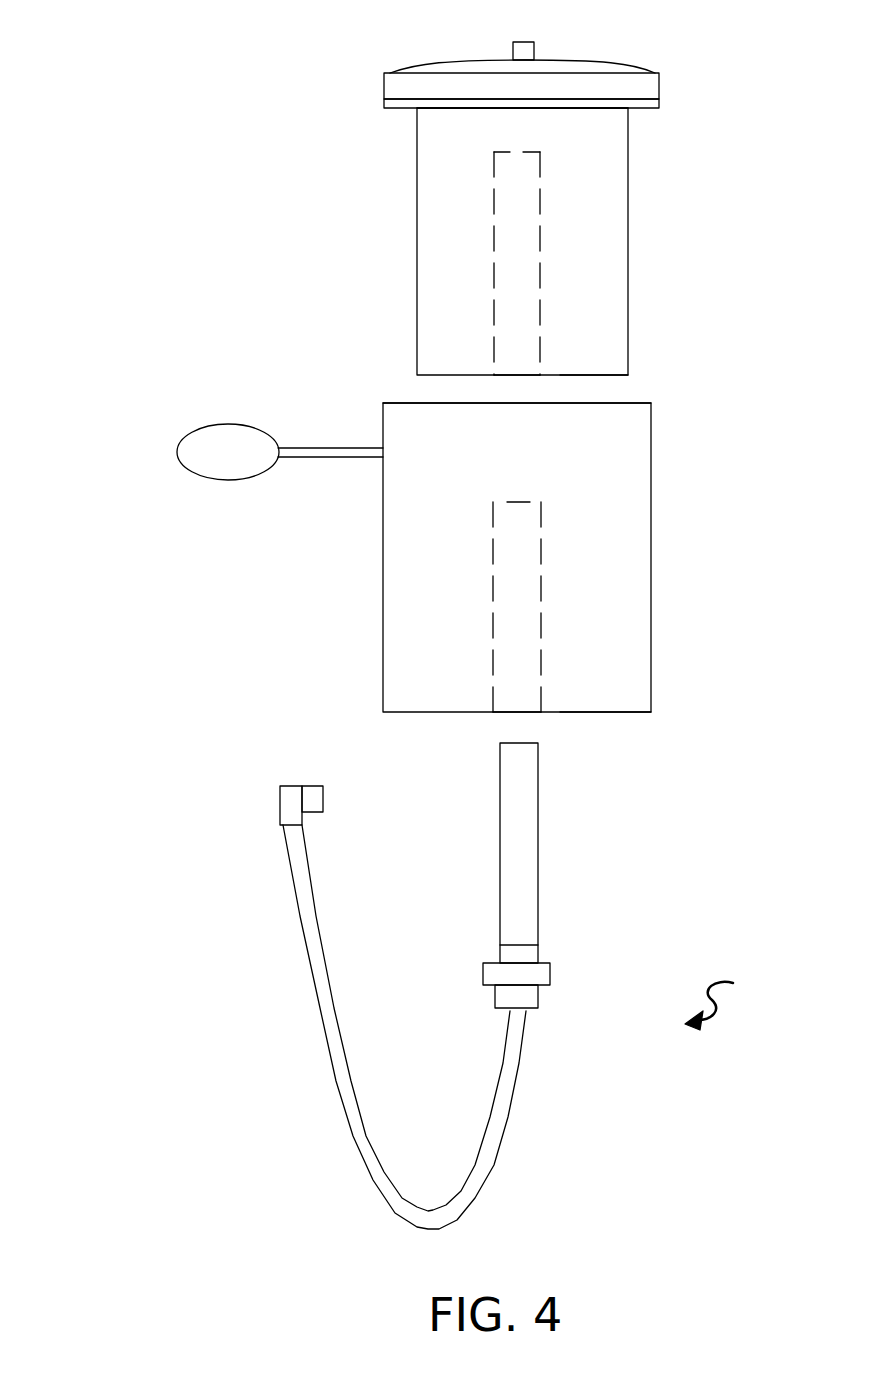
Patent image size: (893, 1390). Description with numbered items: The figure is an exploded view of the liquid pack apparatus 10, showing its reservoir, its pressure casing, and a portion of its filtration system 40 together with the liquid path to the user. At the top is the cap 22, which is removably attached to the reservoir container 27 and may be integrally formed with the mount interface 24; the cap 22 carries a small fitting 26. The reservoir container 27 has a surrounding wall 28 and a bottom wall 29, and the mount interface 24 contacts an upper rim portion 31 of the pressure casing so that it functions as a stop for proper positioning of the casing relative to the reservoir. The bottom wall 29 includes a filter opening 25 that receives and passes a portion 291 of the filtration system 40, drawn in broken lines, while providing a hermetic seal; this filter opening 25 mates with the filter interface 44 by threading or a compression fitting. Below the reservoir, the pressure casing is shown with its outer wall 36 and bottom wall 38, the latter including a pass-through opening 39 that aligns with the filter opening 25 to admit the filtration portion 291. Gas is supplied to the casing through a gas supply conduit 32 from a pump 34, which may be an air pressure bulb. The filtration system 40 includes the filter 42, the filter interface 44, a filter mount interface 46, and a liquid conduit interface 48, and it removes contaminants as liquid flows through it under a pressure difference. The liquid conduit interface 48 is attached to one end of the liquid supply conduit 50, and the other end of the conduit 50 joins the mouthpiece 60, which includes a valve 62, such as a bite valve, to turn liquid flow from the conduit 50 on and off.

The liquid pack apparatus 10 is at (58, 66).
The cap 22 is at (660, 75).
The mount interface 24 is at (660, 108).
The knob 26 is at (525, 38).
The reservoir container 27 is at (603, 150).
The surrounding wall 28 is at (628, 207).
The portion of the filtration system 291 is at (532, 262).
The bottom wall 29 is at (590, 375).
The filter opening 25 is at (513, 375).
The upper rim portion 31 is at (400, 403).
The gas supply conduit 32 is at (322, 457).
The pump 34 is at (228, 452).
The outer wall 36 is at (651, 490).
The bottom wall 38 is at (618, 712).
The pass-through opening 39 is at (508, 712).
The filtration system 40 is at (728, 1004).
The filter 42 is at (538, 810).
The filter interface 44 is at (538, 952).
The filter mount interface 46 is at (550, 975).
The liquid conduit interface 48 is at (538, 1000).
The liquid supply conduit 50 is at (351, 1110).
The mouthpiece 60 is at (280, 803).
The valve 62 is at (323, 799).